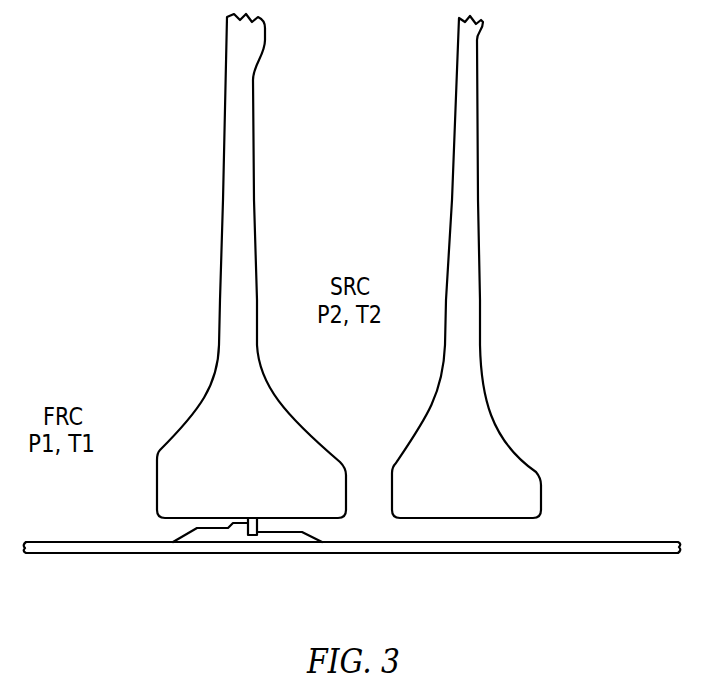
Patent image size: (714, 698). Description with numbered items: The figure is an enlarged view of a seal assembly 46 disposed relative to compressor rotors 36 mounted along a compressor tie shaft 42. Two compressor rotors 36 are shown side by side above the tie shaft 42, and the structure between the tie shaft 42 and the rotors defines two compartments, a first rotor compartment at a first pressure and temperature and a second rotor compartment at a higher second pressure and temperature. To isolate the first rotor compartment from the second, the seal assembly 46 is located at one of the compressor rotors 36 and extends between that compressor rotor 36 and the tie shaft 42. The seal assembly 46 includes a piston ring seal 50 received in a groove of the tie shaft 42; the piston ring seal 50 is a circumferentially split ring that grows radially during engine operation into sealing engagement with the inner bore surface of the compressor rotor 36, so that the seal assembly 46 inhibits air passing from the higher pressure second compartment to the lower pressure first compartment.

The compressor rotor 36 is at (255, 170).
The tie shaft 42 is at (97, 555).
The seal assembly 46 is at (247, 492).
The piston ring seal 50 is at (238, 533).